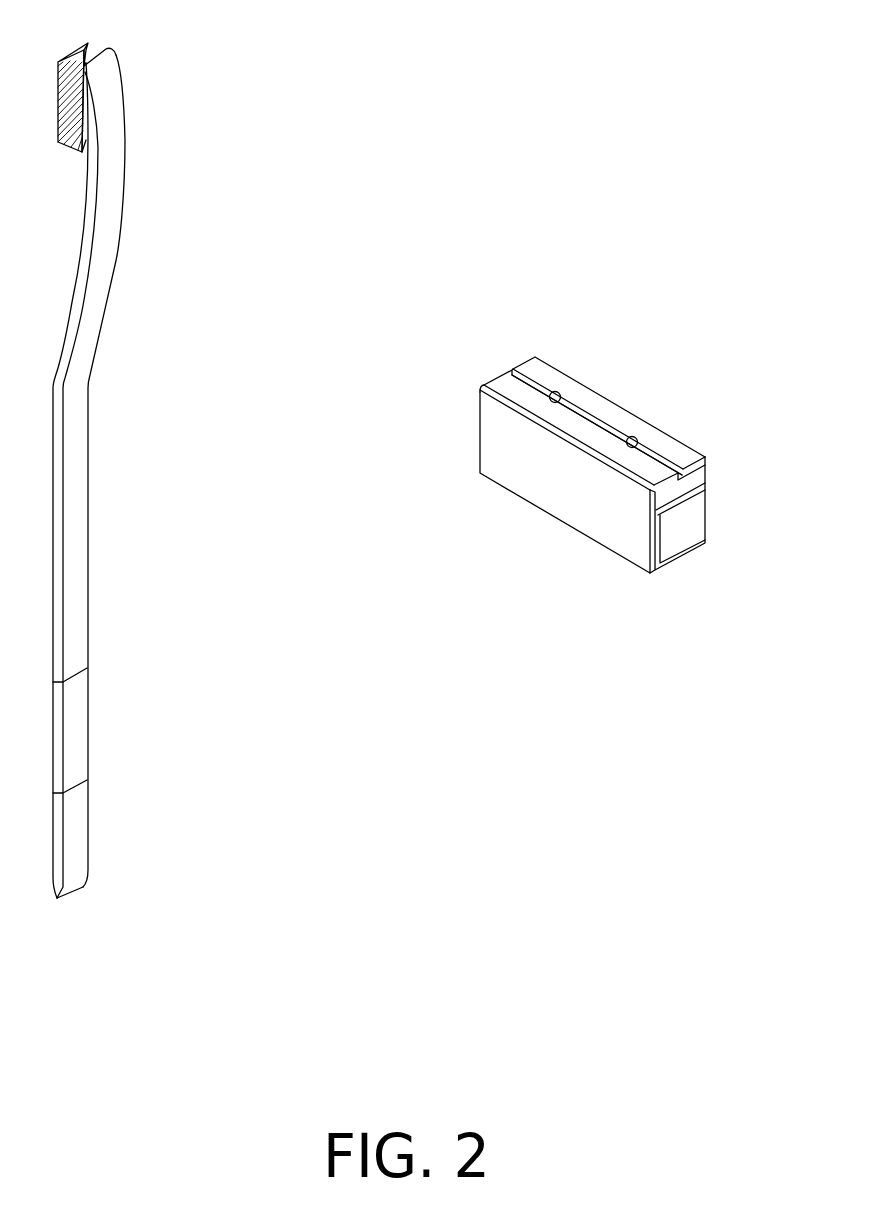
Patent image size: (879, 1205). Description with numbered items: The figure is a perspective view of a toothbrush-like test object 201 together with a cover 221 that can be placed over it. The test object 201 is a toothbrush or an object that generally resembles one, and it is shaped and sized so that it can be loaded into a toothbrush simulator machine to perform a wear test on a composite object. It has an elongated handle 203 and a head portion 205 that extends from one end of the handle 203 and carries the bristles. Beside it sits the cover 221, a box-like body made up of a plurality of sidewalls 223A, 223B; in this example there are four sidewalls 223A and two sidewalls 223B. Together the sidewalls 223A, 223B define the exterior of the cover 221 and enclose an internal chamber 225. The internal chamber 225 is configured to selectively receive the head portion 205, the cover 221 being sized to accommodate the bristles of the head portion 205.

The test object 201 is at (148, 470).
The handle 203 is at (77, 587).
The head portion 205 is at (102, 92).
The cover 221 is at (591, 479).
The sidewalls 223A is at (567, 477).
The sidewalls 223B is at (672, 527).
The internal chamber 225 is at (695, 479).